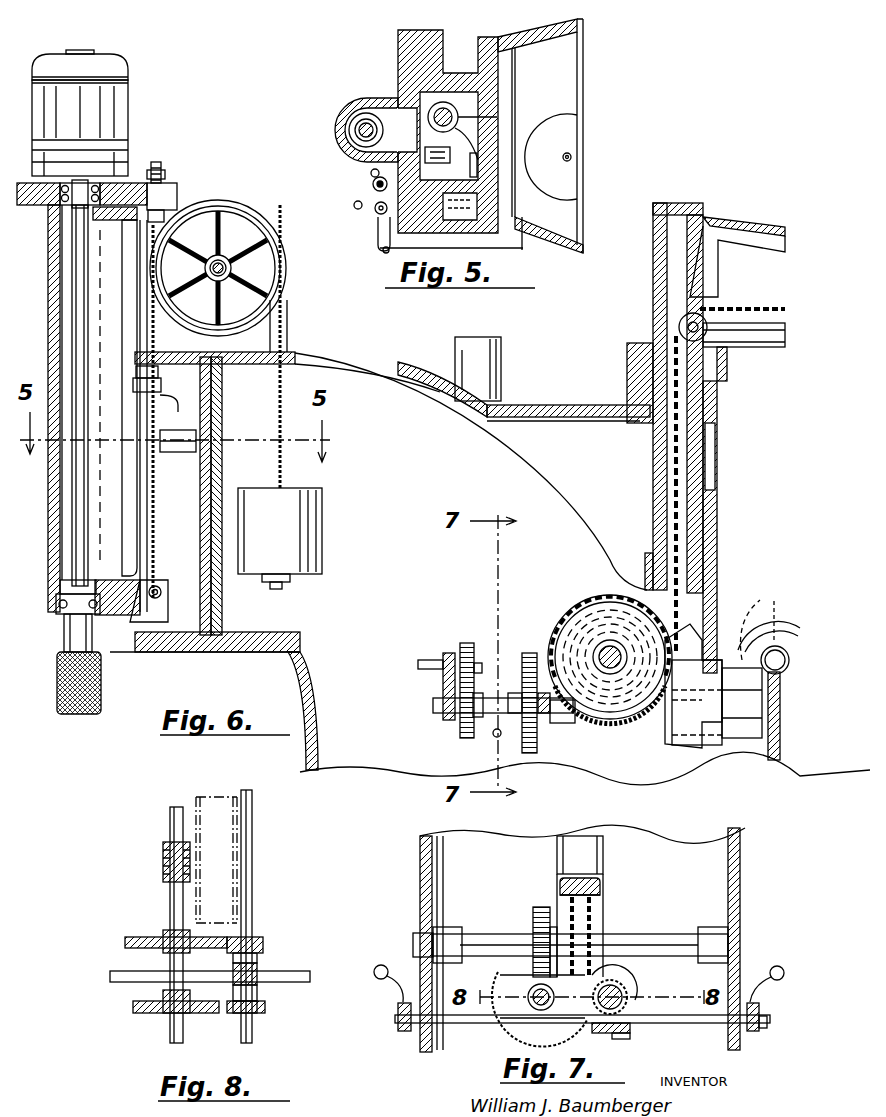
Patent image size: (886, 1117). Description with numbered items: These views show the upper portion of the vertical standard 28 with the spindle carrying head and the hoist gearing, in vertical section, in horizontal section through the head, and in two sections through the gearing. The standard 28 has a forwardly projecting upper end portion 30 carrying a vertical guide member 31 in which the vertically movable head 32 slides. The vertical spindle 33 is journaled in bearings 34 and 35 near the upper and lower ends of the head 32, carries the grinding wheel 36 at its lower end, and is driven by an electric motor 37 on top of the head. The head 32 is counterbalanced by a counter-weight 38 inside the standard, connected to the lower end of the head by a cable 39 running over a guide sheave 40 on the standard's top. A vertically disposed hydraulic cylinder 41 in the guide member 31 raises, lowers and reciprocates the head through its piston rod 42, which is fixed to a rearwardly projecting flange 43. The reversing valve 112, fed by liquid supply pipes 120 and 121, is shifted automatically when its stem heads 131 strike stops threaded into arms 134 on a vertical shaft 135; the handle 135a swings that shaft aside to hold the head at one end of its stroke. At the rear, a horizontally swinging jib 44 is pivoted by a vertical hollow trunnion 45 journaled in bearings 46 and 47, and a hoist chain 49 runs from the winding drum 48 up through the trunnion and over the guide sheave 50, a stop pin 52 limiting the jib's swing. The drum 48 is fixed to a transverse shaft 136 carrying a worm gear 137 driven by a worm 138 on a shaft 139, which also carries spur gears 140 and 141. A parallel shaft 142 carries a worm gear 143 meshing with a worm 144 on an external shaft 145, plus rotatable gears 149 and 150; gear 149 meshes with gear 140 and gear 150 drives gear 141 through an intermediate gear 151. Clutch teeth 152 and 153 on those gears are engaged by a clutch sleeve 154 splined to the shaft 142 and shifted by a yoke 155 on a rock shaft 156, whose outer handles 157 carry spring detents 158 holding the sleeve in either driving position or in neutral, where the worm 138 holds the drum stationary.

In FIG. 6, the vertical standard 28 is at (305, 760).
In FIG. 7, the vertical standard 28 is at (742, 856).
In FIG. 6, the forwardly projecting upper end portion 30 is at (238, 654).
In FIG. 6, the vertical guide member 31 is at (158, 654).
In FIG. 5, the vertical guide member 31 is at (463, 73).
In FIG. 6, the vertically movable head 32 is at (52, 516).
In FIG. 5, the vertically movable head 32 is at (372, 96).
In FIG. 6, the vertical spindle 33 is at (82, 406).
In FIG. 5, the vertical spindle 33 is at (356, 118).
In FIG. 6, the bearing 34 is at (104, 210).
In FIG. 6, the bearing 35 is at (60, 596).
In FIG. 6, the grinding wheel 36 is at (100, 716).
In FIG. 6, the electric motor 37 is at (116, 127).
In FIG. 6, the counter-weight 38 is at (308, 576).
In FIG. 5, the counter-weight 38 is at (570, 178).
In FIG. 6, the cable 39 is at (153, 482).
In FIG. 5, the cable 39 is at (572, 156).
In FIG. 6, the guide sheave 40 is at (262, 230).
In FIG. 6, the hydraulic cylinder 41 is at (140, 498).
In FIG. 5, the hydraulic cylinder 41 is at (462, 114).
In FIG. 6, the piston rod 42 is at (155, 228).
In FIG. 6, the flange 43 is at (170, 190).
In FIG. 6, the jib 44 is at (756, 230).
In FIG. 6, the vertical hollow trunnion 45 is at (717, 412).
In FIG. 7, the vertical hollow trunnion 45 is at (578, 834).
In FIG. 6, the bearing 46 is at (728, 370).
In FIG. 6, the bearing 47 is at (717, 572).
In FIG. 7, the bearing 47 is at (585, 860).
In FIG. 6, the winding drum 48 is at (566, 610).
In FIG. 7, the winding drum 48 is at (601, 889).
In FIG. 6, the hoist chain 49 is at (682, 488).
In FIG. 7, the hoist chain 49 is at (598, 932).
In FIG. 6, the guide sheave 50 is at (708, 314).
In FIG. 6, the stop pin 52 is at (502, 364).
In FIG. 5, the reversing valve 112 is at (378, 236).
In FIG. 5, the liquid supply pipe 120 is at (433, 254).
In FIG. 5, the liquid supply pipe 121 is at (383, 252).
In FIG. 5, the head 131 is at (375, 212).
In FIG. 5, the arm 134 is at (373, 186).
In FIG. 5, the vertical shaft 135 is at (371, 173).
In FIG. 5, the handle 135a is at (354, 205).
In FIG. 6, the transverse shaft 136 is at (612, 646).
In FIG. 7, the transverse shaft 136 is at (656, 938).
In FIG. 6, the worm gear 137 is at (560, 634).
In FIG. 7, the worm gear 137 is at (530, 914).
In FIG. 6, the worm 138 is at (604, 720).
In FIG. 8, the worm 138 is at (163, 862).
In FIG. 6, the shaft 139 is at (538, 720).
In FIG. 7, the shaft 139 is at (556, 1002).
In FIG. 8, the shaft 139 is at (170, 906).
In FIG. 6, the spur gear 140 is at (514, 690).
In FIG. 7, the spur gear 140 is at (506, 984).
In FIG. 8, the spur gear 140 is at (126, 942).
In FIG. 6, the spur gear 141 is at (458, 722).
In FIG. 8, the spur gear 141 is at (135, 1014).
In FIG. 6, the shaft 142 is at (672, 746).
In FIG. 7, the shaft 142 is at (628, 998).
In FIG. 8, the shaft 142 is at (252, 906).
In FIG. 6, the worm gear 143 is at (770, 764).
In FIG. 6, the worm 144 is at (775, 645).
In FIG. 6, the shaft 145 is at (762, 600).
In FIG. 7, the gear 149 is at (620, 984).
In FIG. 8, the gear 149 is at (263, 944).
In FIG. 8, the gear 150 is at (254, 1015).
In FIG. 6, the intermediate gear 151 is at (452, 648).
In FIG. 8, the clutch teeth 152 is at (258, 960).
In FIG. 8, the clutch teeth 153 is at (260, 999).
In FIG. 7, the clutch sleeve 154 is at (630, 1020).
In FIG. 8, the clutch sleeve 154 is at (260, 971).
In FIG. 7, the yoke 155 is at (647, 1046).
In FIG. 8, the yoke 155 is at (236, 978).
In FIG. 6, the rock shaft 156 is at (500, 738).
In FIG. 7, the rock shaft 156 is at (486, 1036).
In FIG. 8, the rock shaft 156 is at (118, 981).
In FIG. 7, the handle 157 is at (383, 964).
In FIG. 7, the spring detent 158 is at (398, 1012).